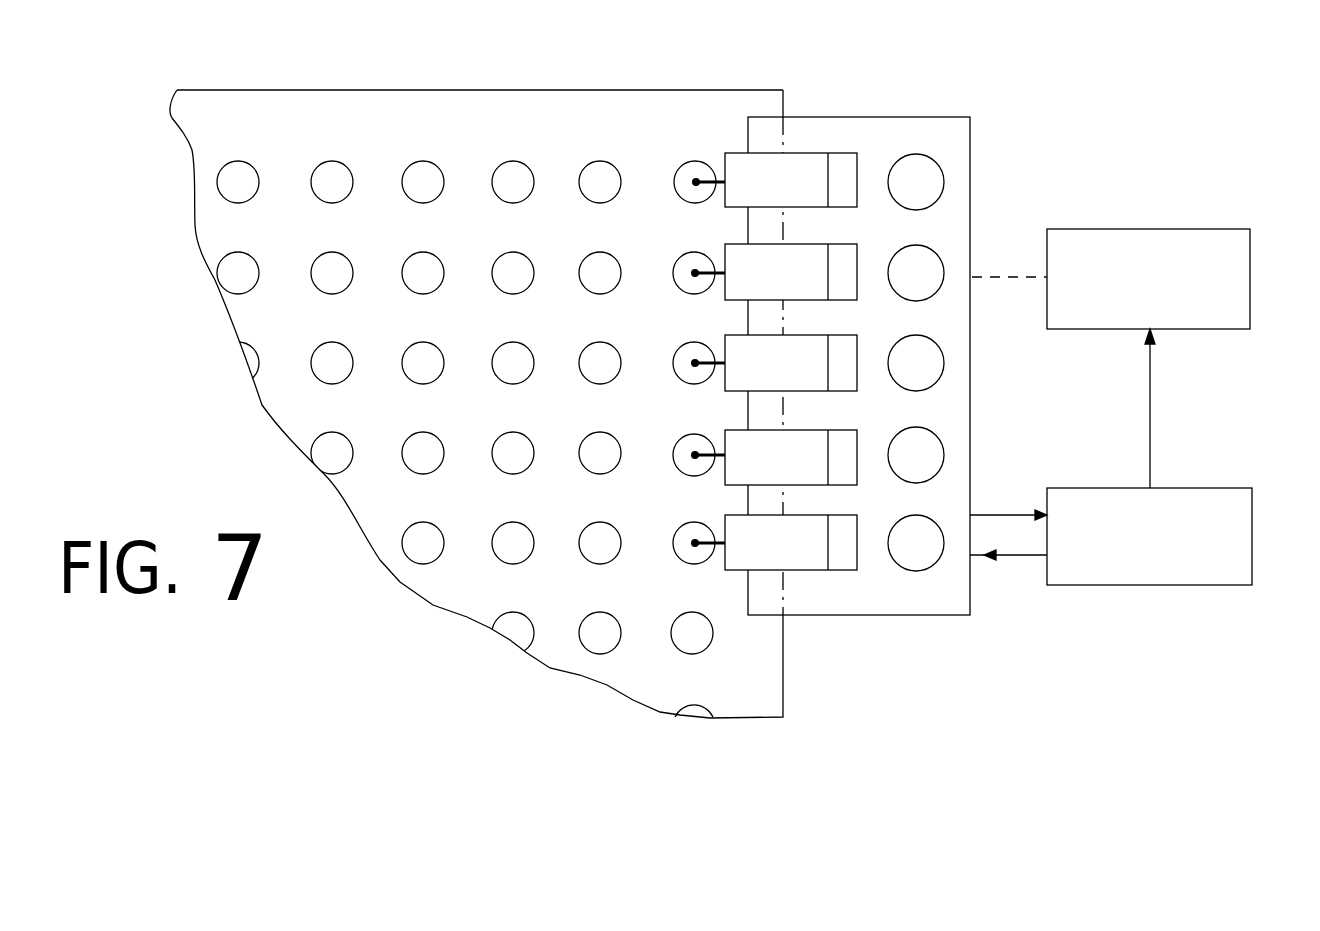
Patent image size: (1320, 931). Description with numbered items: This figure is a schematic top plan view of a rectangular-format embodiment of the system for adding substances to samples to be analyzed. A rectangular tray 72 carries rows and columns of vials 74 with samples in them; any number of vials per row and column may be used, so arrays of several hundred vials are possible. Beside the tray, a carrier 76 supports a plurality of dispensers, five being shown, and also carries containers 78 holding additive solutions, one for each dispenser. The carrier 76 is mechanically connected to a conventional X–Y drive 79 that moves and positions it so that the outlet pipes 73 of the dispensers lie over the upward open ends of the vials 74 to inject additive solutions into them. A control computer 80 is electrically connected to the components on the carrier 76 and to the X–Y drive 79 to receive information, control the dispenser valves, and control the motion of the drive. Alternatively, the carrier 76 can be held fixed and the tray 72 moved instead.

The rectangular tray 72 is at (270, 90).
The outlet pipes 73 is at (693, 272).
The vials 74 is at (517, 161).
The carrier 76 is at (877, 117).
The containers 78 is at (936, 436).
The X–Y drive 79 is at (1195, 228).
The control computer 80 is at (1205, 487).